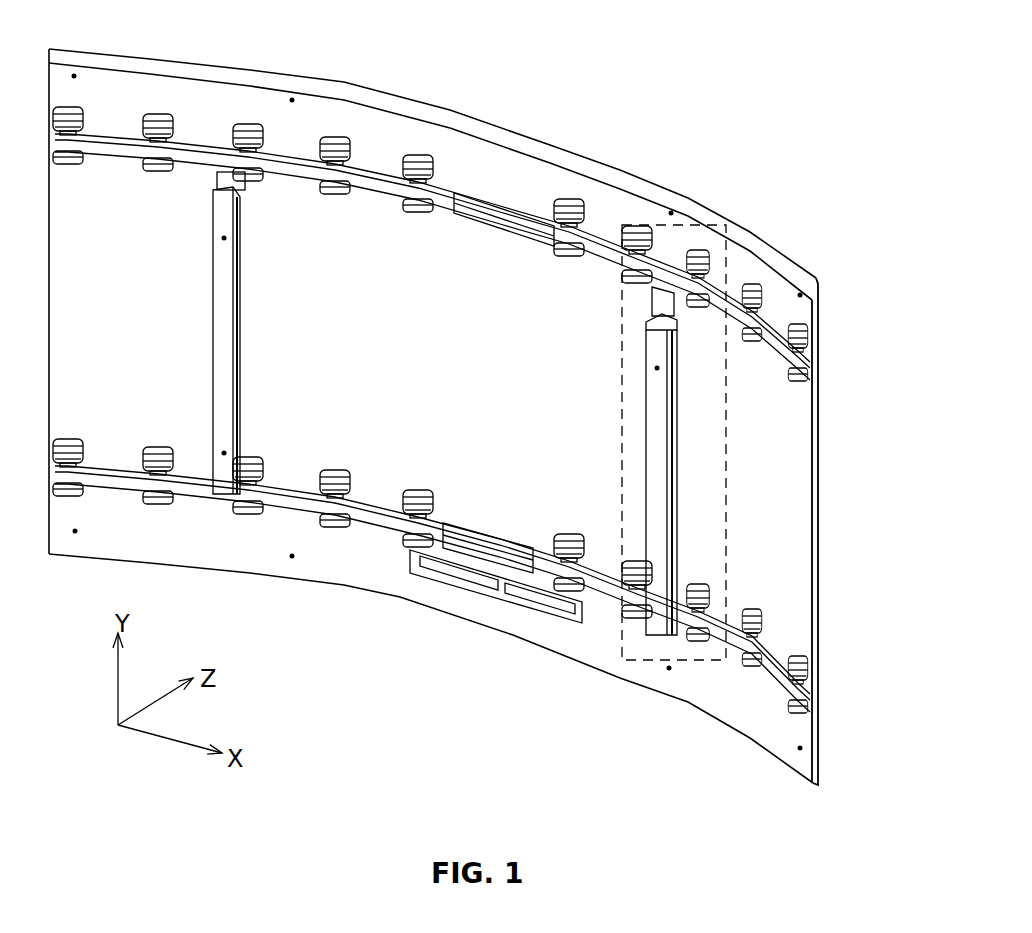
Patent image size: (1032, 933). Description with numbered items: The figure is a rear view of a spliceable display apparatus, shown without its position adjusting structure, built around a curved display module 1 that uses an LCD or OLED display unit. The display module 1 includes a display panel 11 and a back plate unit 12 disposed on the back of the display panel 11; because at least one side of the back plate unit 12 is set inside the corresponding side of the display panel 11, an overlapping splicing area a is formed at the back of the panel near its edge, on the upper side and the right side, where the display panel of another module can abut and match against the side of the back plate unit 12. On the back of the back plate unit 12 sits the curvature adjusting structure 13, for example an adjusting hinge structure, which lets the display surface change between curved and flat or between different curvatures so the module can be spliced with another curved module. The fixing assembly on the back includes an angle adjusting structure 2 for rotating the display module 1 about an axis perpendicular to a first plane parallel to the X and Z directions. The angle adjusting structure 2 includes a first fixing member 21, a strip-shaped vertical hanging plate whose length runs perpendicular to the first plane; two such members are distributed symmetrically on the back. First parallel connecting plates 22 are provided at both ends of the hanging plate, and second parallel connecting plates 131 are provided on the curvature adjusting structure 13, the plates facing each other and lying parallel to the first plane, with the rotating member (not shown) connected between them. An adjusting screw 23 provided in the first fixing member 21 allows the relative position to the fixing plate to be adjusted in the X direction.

The display module 1 is at (677, 110).
The display panel 11 is at (517, 123).
The back plate unit 12 is at (566, 180).
The curvature adjusting structure 13 is at (590, 225).
The second parallel connecting plate 131 is at (675, 315).
The overlapping splicing area a is at (402, 98).
The angle adjusting structure 2 is at (700, 215).
The first fixing member 21 is at (661, 411).
The first parallel connecting plate 22 is at (677, 325).
The adjusting screw 23 is at (657, 368).